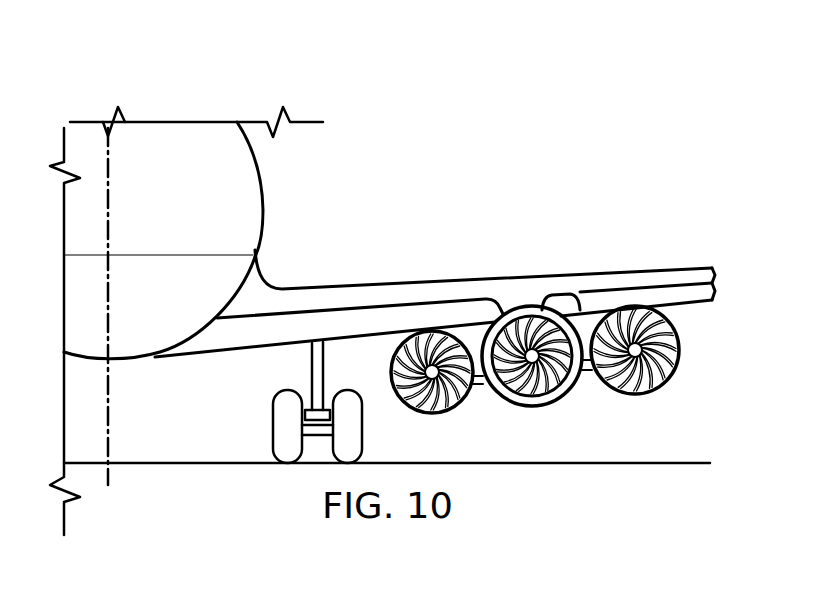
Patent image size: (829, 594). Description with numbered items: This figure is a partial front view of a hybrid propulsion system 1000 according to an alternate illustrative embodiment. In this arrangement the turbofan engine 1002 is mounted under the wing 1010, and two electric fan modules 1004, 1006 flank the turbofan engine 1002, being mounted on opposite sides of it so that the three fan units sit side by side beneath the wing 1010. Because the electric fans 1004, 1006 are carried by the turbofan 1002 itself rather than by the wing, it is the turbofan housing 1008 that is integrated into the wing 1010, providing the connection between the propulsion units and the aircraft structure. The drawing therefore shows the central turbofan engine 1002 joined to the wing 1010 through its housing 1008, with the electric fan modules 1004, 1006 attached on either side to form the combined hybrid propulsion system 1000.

The hybrid propulsion system 1000 is at (197, 72).
The turbofan engine 1002 is at (578, 399).
The electric fan module 1004 is at (450, 410).
The electric fan module 1006 is at (678, 357).
The turbofan housing 1008 is at (577, 298).
The wing 1010 is at (373, 285).